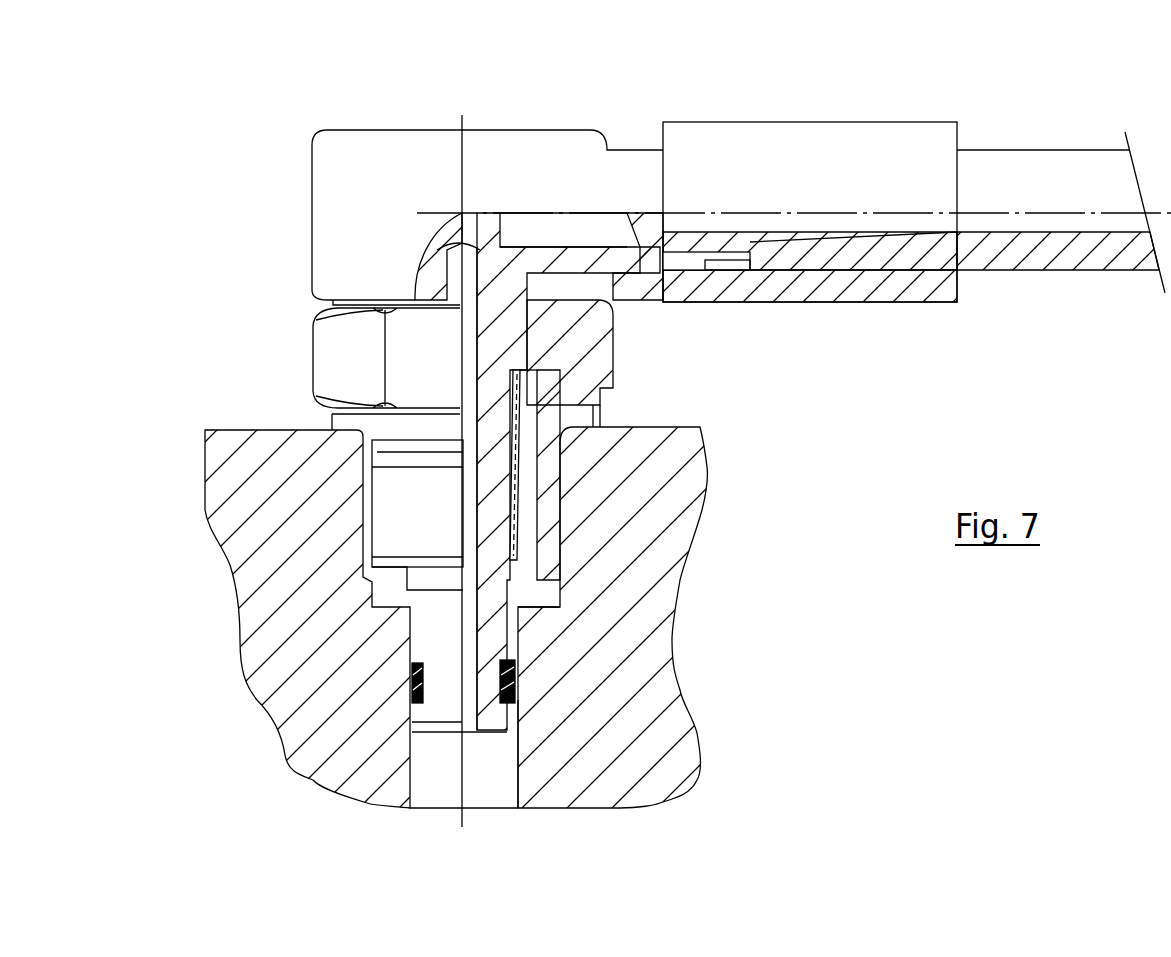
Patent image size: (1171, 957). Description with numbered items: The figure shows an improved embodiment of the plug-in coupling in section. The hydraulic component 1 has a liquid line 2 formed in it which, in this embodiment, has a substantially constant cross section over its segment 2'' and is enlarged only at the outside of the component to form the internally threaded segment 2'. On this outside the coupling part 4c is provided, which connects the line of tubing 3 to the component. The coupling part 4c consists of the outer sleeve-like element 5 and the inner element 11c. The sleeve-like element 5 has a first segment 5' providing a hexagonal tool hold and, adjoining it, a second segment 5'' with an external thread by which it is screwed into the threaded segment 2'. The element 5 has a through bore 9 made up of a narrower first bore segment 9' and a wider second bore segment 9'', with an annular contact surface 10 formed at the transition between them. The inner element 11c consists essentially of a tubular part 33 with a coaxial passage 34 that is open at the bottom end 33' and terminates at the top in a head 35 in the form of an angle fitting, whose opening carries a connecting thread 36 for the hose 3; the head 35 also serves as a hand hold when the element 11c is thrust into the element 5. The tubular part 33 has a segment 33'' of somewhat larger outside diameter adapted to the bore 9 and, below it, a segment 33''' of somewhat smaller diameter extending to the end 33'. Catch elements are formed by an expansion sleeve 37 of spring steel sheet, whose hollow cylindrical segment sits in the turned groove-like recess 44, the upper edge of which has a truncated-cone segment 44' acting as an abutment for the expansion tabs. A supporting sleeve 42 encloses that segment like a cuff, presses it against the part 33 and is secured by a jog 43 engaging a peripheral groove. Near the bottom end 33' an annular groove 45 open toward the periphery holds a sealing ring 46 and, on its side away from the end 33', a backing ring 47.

The hydraulic component 1 is at (663, 508).
The liquid line 2 is at (476, 855).
The internally threaded segment 2' is at (644, 582).
The segment of substantially constant cross section 2'' is at (641, 754).
The line of tubing 3 is at (1058, 182).
The coupling part 4c is at (472, 125).
The sleeve-like element 5 is at (341, 355).
The first segment 5' is at (329, 325).
The second segment 5'' is at (294, 515).
The through bore 9 is at (584, 462).
The first bore segment 9' is at (618, 340).
The second bore segment 9'' is at (650, 533).
The annular contact surface 10 is at (597, 392).
The inner element 11c is at (302, 143).
The tubular part 33 is at (430, 491).
The bottom end 33' is at (456, 801).
The larger-diameter segment 33'' is at (656, 370).
The smaller-diameter segment 33''' is at (649, 618).
The passage 34 is at (500, 215).
The head 35 is at (498, 153).
The connecting thread 36 is at (600, 287).
The expansion sleeve 37 is at (515, 468).
The supporting sleeve 42 is at (525, 490).
The jog 43 is at (515, 555).
The groove-like recess 44 is at (332, 420).
The truncated-cone segment 44' is at (348, 265).
The annular groove 45 is at (443, 626).
The sealing ring 46 is at (440, 690).
The backing ring 47 is at (415, 672).